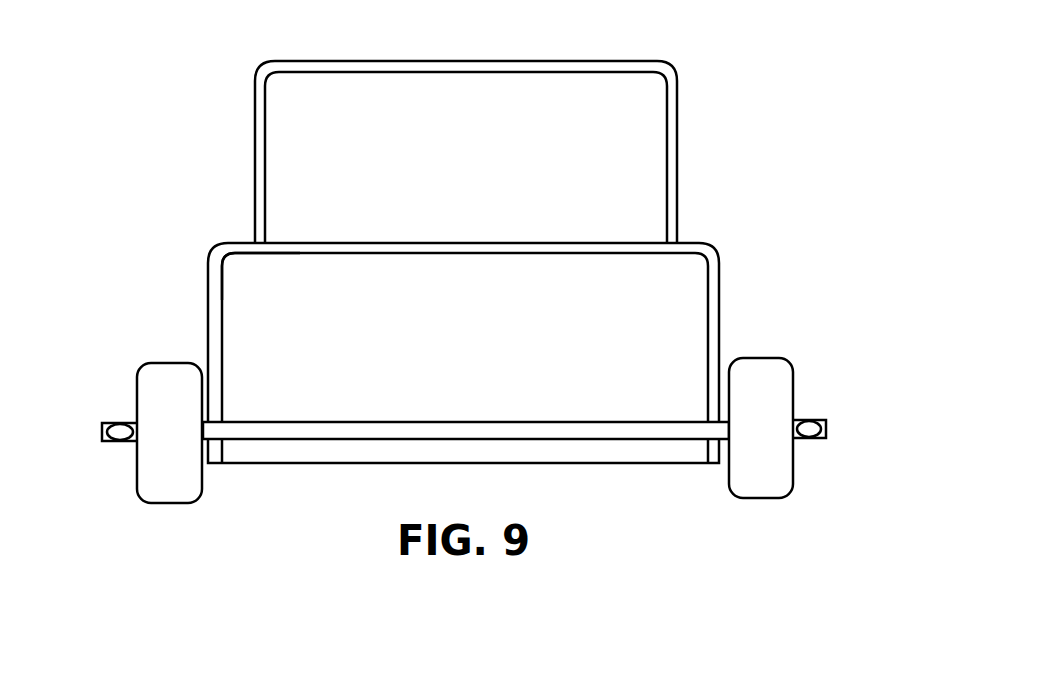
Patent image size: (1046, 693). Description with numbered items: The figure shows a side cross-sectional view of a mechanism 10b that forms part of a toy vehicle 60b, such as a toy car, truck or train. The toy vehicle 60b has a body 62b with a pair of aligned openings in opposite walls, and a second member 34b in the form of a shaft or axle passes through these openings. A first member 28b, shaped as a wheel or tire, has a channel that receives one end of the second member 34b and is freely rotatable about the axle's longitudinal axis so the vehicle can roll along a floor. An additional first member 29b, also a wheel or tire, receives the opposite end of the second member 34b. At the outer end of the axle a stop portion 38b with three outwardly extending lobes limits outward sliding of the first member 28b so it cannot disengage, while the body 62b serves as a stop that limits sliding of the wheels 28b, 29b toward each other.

The mechanism 10b is at (787, 310).
The toy vehicle 60b is at (720, 90).
The body 62b is at (222, 333).
The second member 34b is at (556, 420).
The additional first member 29b is at (137, 363).
The first member 28b is at (803, 488).
The stop portion 38b is at (822, 413).